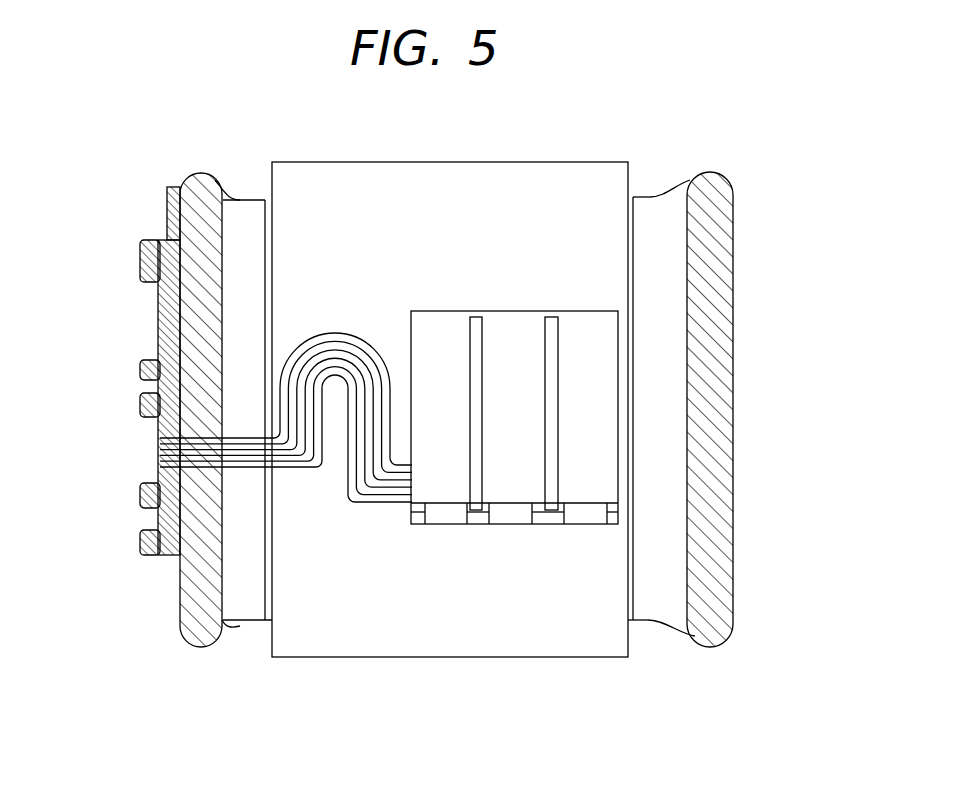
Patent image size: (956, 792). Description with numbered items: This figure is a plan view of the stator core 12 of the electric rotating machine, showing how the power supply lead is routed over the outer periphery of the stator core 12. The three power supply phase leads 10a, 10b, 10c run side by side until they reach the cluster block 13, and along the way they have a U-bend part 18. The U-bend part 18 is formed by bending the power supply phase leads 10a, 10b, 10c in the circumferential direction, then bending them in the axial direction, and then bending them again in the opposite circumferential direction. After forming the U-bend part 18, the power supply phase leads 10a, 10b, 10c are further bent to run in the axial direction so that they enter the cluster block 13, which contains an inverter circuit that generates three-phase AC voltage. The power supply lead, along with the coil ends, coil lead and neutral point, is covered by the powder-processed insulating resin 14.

The stator core 12 is at (583, 643).
The cluster block 13 is at (608, 442).
The insulating resin 14 is at (206, 583).
The power supply phase lead 10a is at (300, 462).
The power supply phase lead 10b is at (302, 330).
The power supply phase lead 10c is at (244, 445).
The U-bend part 18 is at (358, 334).